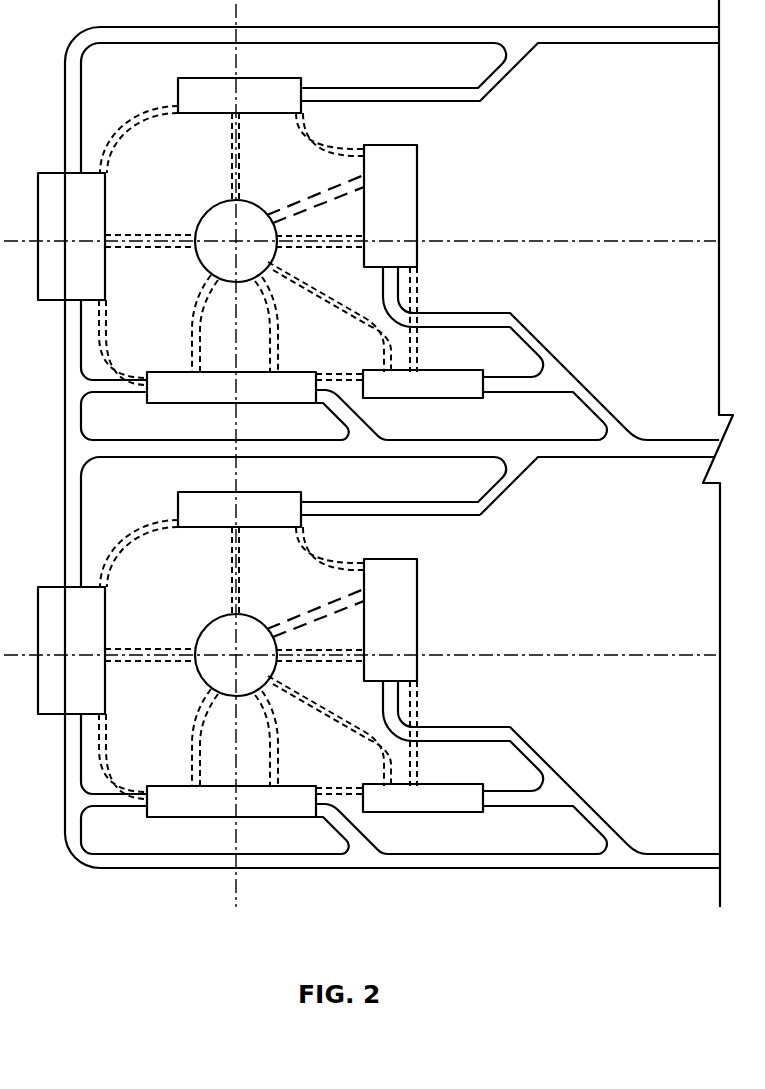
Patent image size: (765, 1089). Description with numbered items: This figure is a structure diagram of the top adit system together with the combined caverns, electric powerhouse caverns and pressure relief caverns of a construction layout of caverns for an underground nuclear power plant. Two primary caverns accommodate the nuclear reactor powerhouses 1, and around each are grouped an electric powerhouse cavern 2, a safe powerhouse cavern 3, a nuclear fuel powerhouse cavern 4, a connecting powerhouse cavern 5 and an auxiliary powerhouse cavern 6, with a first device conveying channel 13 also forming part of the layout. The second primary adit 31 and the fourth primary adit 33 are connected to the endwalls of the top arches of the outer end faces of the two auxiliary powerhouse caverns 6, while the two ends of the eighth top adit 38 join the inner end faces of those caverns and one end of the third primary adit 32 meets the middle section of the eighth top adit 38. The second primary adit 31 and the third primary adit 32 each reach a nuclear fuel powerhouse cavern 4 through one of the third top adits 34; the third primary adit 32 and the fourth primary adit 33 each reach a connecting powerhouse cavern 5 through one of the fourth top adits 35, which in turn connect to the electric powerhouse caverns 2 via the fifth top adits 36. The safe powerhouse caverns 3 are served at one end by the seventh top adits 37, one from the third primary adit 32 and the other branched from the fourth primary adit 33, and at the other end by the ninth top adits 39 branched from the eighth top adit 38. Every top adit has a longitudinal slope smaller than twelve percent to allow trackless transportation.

The nuclear reactor powerhouse 1 is at (215, 223).
The electric powerhouse cavern 2 is at (420, 385).
The safe powerhouse cavern 3 is at (292, 368).
The nuclear fuel powerhouse cavern 4 is at (207, 103).
The connecting powerhouse cavern 5 is at (397, 257).
The auxiliary powerhouse cavern 6 is at (97, 223).
The first device conveying channel 13 is at (318, 200).
The second primary adit 31 is at (590, 33).
The third primary adit 32 is at (590, 448).
The fourth primary adit 33 is at (590, 860).
The third top adit 34 is at (478, 95).
The fourth top adit 35 is at (600, 405).
The fifth top adit 36 is at (518, 384).
The seventh top adit 37 is at (345, 410).
The eighth top adit 38 is at (72, 425).
The ninth top adit 39 is at (103, 388).